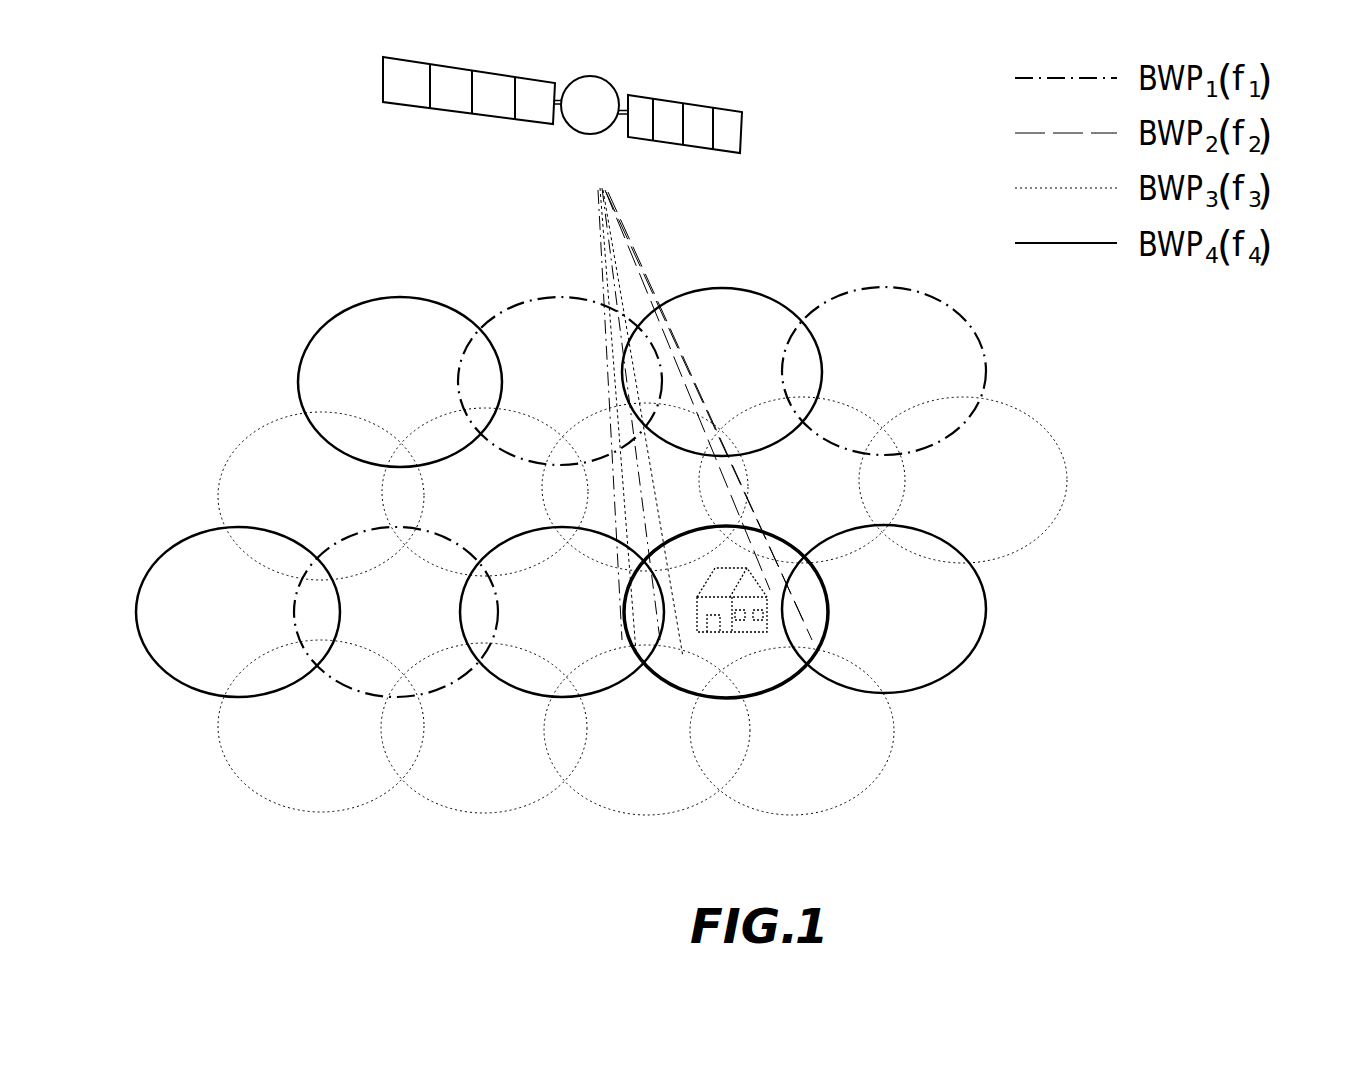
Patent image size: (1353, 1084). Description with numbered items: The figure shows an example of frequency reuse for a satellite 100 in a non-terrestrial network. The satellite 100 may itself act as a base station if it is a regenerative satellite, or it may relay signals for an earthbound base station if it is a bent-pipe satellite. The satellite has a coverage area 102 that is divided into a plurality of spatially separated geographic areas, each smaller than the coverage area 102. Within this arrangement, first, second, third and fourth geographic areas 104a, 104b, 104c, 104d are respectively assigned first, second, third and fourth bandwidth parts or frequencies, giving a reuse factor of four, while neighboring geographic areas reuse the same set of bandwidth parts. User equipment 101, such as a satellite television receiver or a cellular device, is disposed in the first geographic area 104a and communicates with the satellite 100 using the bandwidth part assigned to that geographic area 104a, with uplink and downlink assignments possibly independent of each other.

The satellite 100 is at (698, 103).
The user equipment 101 is at (715, 632).
The coverage area 102 is at (601, 551).
The first geographic area 104a is at (767, 693).
The second geographic area 104b is at (835, 562).
The third geographic area 104c is at (957, 565).
The fourth geographic area 104d is at (945, 677).